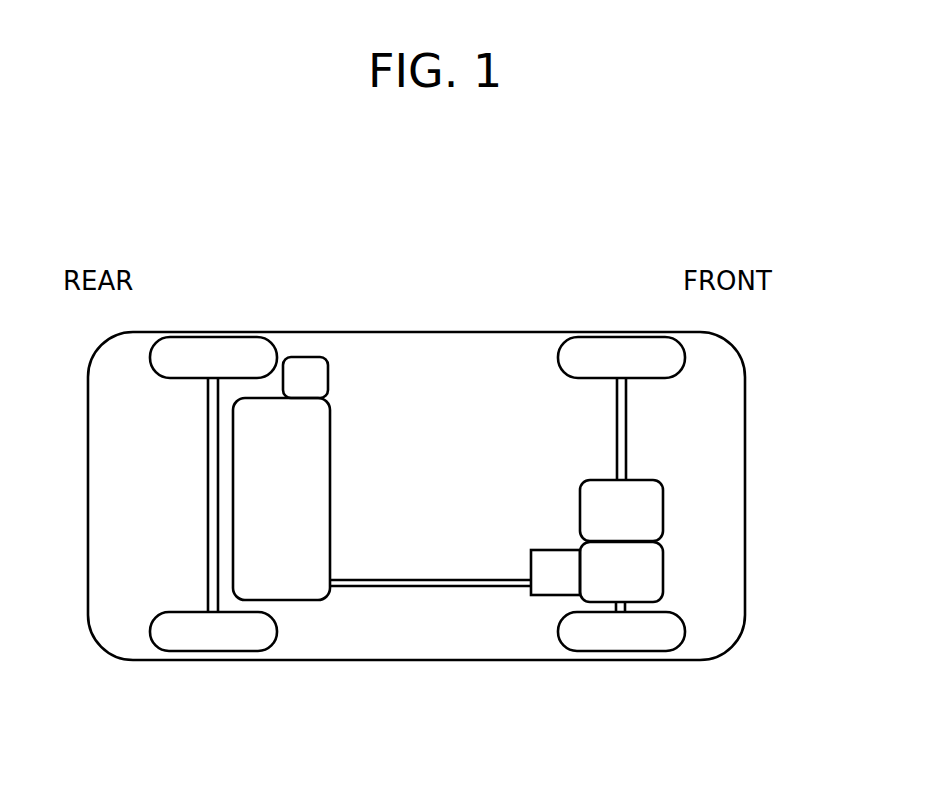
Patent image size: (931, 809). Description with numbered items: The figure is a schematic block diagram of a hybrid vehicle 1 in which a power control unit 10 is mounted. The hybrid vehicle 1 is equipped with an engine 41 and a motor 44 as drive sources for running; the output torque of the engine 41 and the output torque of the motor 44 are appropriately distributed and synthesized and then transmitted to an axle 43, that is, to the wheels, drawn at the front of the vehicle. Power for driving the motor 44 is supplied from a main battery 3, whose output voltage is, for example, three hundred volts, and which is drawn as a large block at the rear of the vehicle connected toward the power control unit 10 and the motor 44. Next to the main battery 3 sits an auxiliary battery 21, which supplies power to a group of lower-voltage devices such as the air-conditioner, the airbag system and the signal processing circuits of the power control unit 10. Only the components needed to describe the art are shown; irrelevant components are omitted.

The hybrid vehicle 1 is at (598, 285).
The main battery 3 is at (294, 600).
The power control unit 10 is at (540, 595).
The auxiliary battery 21 is at (306, 357).
The engine 41 is at (663, 512).
The axle 43 is at (627, 445).
The motor 44 is at (663, 570).